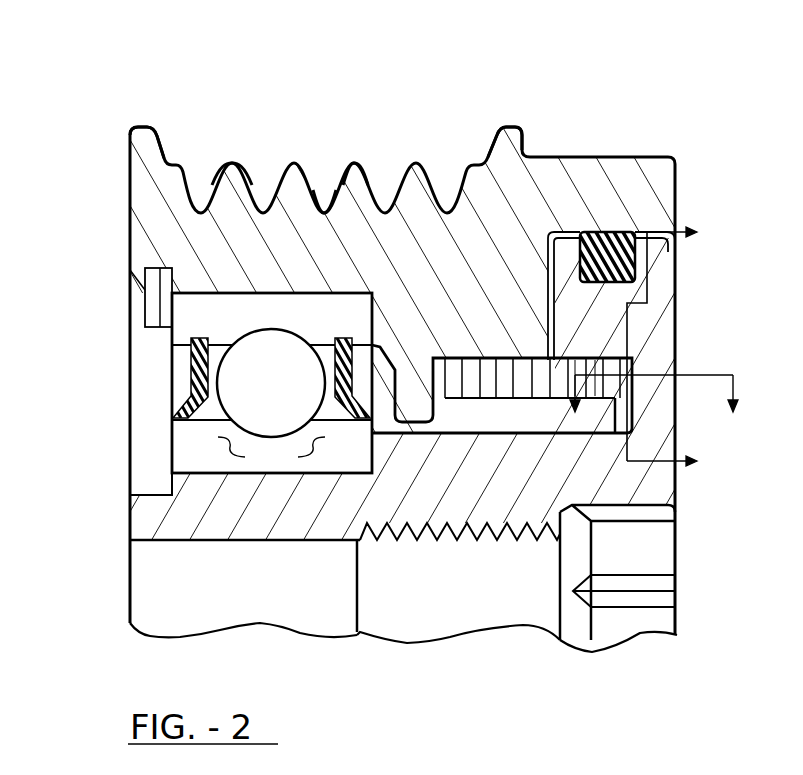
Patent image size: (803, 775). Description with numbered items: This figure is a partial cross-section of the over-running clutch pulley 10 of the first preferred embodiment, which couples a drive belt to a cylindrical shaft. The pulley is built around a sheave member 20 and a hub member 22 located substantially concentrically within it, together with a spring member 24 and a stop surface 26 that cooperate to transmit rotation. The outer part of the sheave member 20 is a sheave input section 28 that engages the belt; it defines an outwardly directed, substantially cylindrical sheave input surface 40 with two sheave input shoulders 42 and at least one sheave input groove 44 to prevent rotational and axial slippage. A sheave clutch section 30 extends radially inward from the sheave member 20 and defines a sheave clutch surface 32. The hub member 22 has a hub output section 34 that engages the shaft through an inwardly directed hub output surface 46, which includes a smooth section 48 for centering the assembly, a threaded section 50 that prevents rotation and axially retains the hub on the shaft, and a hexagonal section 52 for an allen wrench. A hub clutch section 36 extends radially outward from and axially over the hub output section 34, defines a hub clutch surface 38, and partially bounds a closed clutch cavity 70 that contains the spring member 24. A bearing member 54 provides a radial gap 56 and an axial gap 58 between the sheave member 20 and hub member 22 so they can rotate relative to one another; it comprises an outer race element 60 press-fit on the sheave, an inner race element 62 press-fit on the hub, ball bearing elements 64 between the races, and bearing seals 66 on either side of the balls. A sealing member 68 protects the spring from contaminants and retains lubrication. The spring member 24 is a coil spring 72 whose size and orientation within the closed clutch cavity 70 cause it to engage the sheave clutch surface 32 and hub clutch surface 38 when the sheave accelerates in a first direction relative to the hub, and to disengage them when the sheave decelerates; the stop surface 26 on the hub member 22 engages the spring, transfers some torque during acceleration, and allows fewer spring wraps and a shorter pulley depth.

The over-running clutch pulley 10 is at (645, 63).
The sheave member 20 is at (300, 275).
The hub member 22 is at (272, 510).
The spring member 24 is at (597, 388).
The stop surface 26 is at (637, 418).
The sheave input section 28 is at (342, 203).
The sheave clutch section 30 is at (500, 265).
The sheave clutch surface 32 is at (487, 377).
The hub output section 34 is at (182, 525).
The hub clutch section 36 is at (590, 348).
The hub clutch surface 38 is at (560, 370).
The sheave input surface 40 is at (366, 173).
The sheave input shoulders 42 is at (143, 127).
The sheave input groove 44 is at (231, 163).
The hub output surface 46 is at (220, 542).
The smooth section 48 is at (313, 542).
The threaded section 50 is at (442, 530).
The hexagonal section 52 is at (618, 508).
The bearing member 54 is at (180, 439).
The radial gap 56 is at (567, 232).
The axial gap 58 is at (550, 277).
The outer race element 60 is at (212, 325).
The inner race element 62 is at (193, 460).
The ball bearing elements 64 is at (256, 394).
The bearing seals 66 is at (271, 454).
The sealing member 68 is at (618, 250).
The closed clutch cavity 70 is at (494, 433).
The coil spring 72 is at (593, 400).